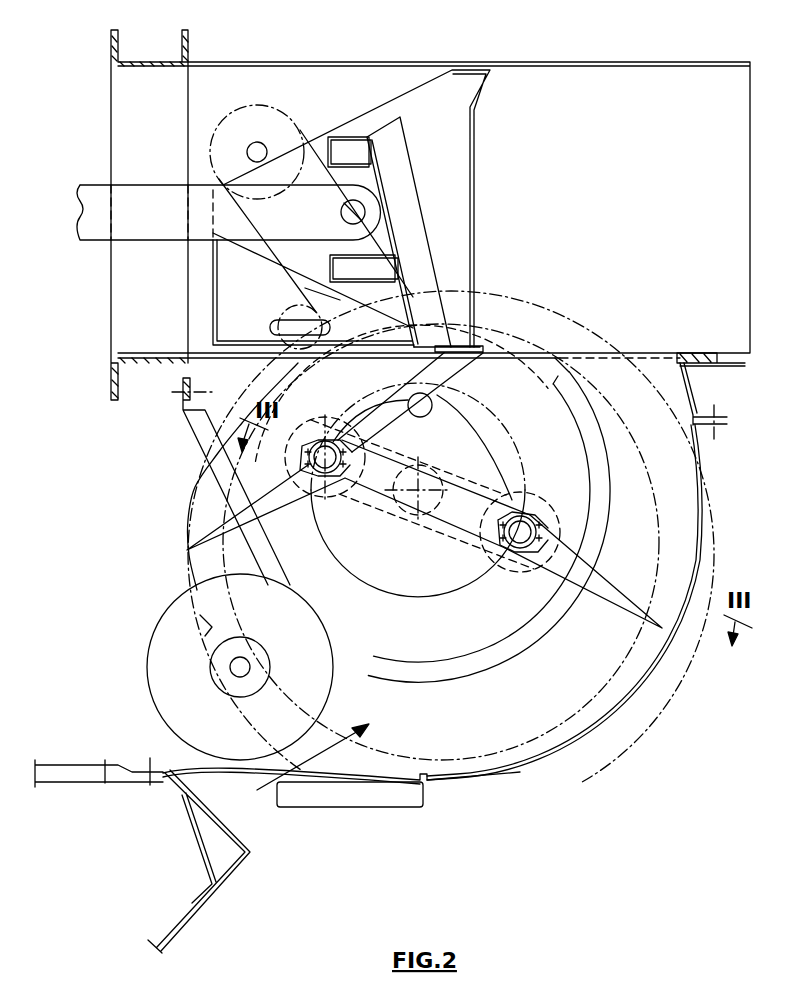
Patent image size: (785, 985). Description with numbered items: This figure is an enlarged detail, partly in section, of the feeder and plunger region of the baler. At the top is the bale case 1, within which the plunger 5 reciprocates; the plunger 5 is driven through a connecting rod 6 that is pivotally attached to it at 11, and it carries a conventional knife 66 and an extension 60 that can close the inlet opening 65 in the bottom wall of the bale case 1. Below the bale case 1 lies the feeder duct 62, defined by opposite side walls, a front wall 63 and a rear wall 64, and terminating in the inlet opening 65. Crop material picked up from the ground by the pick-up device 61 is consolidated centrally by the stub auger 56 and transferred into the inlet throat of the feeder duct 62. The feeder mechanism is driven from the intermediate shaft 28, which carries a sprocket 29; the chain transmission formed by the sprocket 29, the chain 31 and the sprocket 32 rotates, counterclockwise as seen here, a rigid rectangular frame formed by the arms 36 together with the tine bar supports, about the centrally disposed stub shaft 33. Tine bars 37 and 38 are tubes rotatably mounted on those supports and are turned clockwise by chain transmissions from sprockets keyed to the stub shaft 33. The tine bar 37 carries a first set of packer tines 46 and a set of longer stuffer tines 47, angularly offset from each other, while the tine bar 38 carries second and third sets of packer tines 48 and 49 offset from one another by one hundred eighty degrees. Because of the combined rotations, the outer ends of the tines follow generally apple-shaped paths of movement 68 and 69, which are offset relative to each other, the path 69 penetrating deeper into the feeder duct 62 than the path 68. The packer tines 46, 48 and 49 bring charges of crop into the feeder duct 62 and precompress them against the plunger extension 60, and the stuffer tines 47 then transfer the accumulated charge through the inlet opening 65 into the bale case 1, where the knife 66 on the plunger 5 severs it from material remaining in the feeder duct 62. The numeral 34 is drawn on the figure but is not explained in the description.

The bale case 1 is at (583, 72).
The plunger 5 is at (462, 192).
The connecting rod 6 is at (104, 235).
The pivotal attachment of connecting rod to plunger 11 is at (341, 212).
The intermediate shaft 28 is at (263, 142).
The sprocket 29 is at (297, 138).
The chain 31 is at (304, 289).
The sprocket 32 is at (405, 603).
The stub shaft 33 is at (412, 507).
The pulley 34 is at (283, 326).
The arm 36 is at (364, 504).
The tine bar 37 is at (535, 504).
The tine bar 38 is at (320, 494).
The first set of packer tines 46 is at (493, 465).
The stuffer tines 47 is at (607, 600).
The second set of packer tines 48 is at (205, 520).
The third set of packer tines 49 is at (421, 417).
The stub auger 56 is at (145, 662).
The plunger extension 60 is at (258, 350).
The crop pick-up device 61 is at (62, 758).
The feeder duct 62 is at (280, 777).
The front wall 63 is at (468, 622).
The rear wall 64 is at (705, 526).
The inlet opening 65 is at (634, 338).
The knife 66 is at (490, 350).
The path of movement 68 is at (662, 535).
The path of movement 69 is at (678, 418).